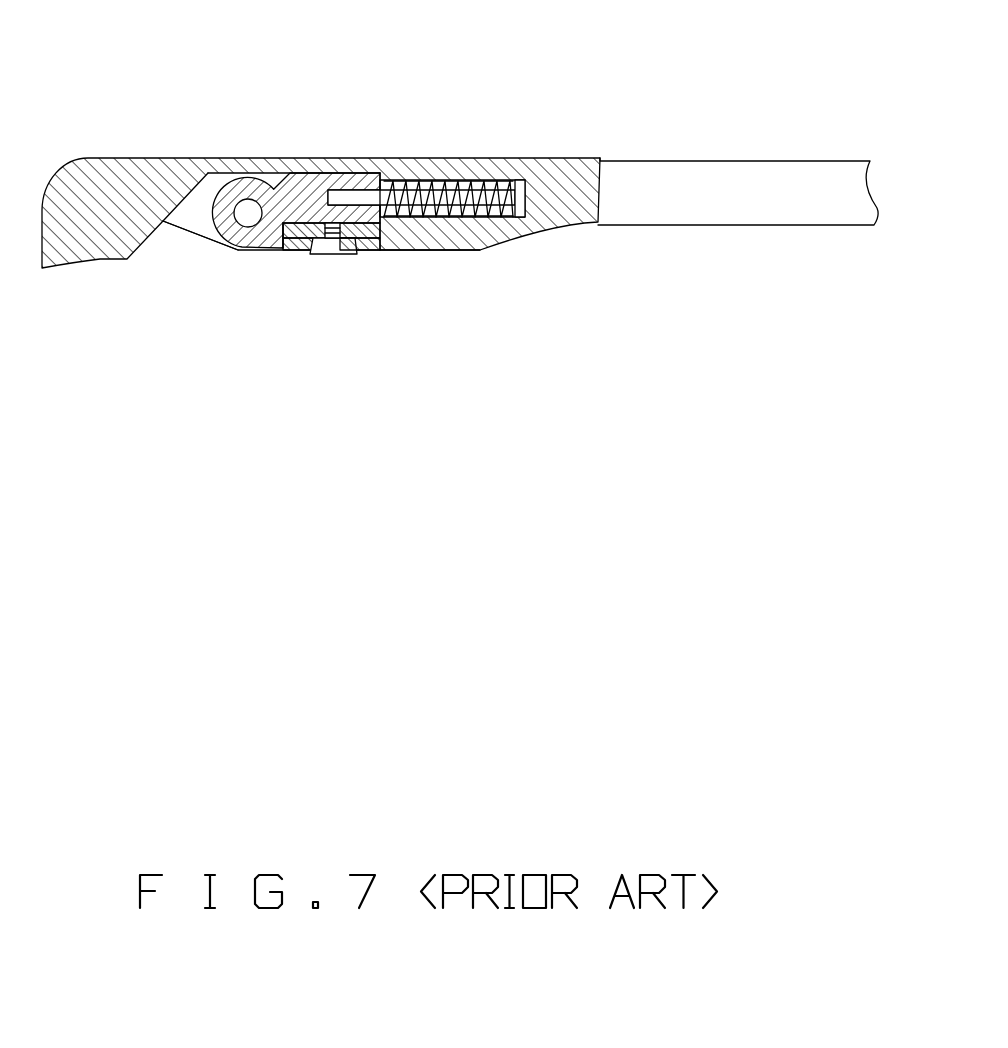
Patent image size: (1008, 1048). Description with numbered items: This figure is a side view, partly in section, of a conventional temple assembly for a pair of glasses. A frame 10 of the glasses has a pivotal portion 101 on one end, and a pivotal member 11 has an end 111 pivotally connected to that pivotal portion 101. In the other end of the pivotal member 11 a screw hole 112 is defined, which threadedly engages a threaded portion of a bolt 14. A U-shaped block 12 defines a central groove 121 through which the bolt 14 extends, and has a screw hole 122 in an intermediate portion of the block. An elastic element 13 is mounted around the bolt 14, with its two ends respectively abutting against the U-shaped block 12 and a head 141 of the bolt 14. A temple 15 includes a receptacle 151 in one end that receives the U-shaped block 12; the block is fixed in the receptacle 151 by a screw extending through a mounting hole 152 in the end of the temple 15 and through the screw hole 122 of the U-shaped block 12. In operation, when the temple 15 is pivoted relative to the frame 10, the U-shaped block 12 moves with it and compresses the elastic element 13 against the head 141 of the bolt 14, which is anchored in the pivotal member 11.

The frame 10 is at (80, 178).
The pivotal portion 101 is at (200, 223).
The pivotal member 11 is at (282, 207).
The end of pivotal member 111 is at (247, 228).
The screw hole 112 is at (353, 190).
The U-shaped block 12 is at (314, 255).
The central groove 121 is at (403, 250).
The screw hole 122 is at (362, 253).
The elastic element 13 is at (417, 187).
The bolt 14 is at (463, 200).
The head of bolt 141 is at (521, 187).
The temple 15 is at (251, 158).
The receptacle 151 is at (295, 222).
The mounting hole 152 is at (322, 255).